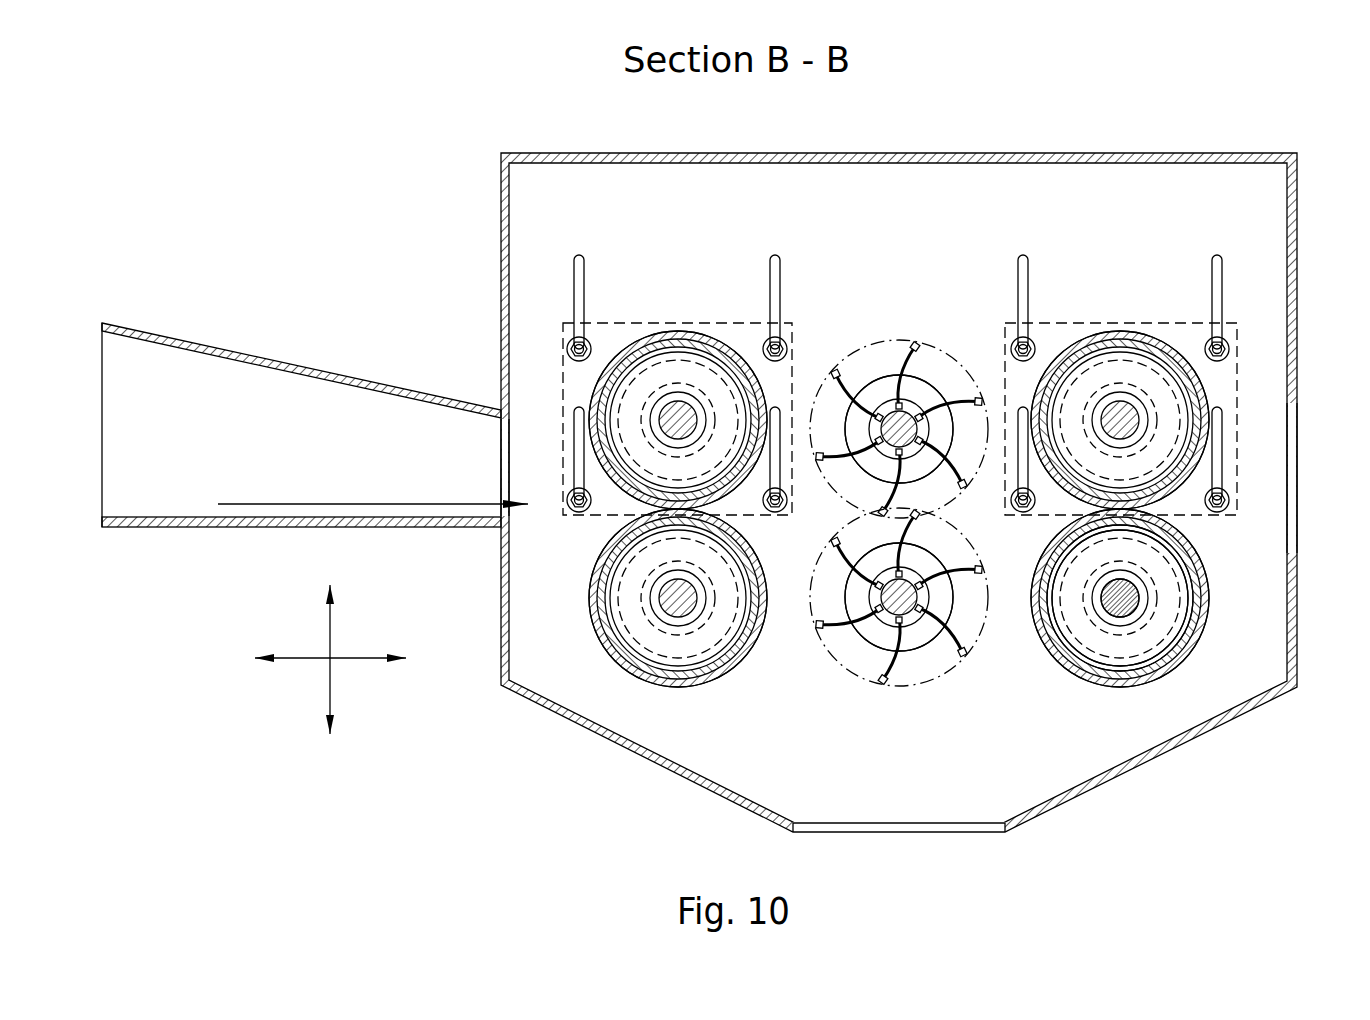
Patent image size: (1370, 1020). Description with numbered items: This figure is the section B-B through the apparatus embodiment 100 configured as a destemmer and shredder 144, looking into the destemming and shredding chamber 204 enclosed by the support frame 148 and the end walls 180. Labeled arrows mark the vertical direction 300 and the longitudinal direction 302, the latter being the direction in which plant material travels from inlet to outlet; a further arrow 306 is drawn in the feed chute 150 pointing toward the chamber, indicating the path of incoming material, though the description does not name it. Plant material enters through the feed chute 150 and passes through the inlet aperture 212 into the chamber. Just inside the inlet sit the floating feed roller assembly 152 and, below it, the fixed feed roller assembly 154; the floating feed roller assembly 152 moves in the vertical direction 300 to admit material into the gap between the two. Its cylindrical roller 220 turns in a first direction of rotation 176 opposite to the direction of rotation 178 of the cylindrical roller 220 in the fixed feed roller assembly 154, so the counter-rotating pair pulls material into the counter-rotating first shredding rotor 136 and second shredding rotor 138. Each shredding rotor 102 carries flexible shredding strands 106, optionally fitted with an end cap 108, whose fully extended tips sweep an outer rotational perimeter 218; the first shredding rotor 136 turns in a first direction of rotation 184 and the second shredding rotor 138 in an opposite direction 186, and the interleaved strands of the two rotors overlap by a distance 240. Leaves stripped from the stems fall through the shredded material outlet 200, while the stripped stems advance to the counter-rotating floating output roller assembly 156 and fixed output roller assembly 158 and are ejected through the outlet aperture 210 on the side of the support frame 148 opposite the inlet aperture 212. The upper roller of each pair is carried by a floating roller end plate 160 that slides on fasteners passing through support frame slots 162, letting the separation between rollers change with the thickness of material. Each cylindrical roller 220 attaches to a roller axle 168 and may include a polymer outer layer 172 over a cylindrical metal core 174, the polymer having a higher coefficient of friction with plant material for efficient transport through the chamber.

The apparatus embodiment 100 is at (242, 77).
The destemmer and shredder 144 is at (222, 152).
The support frame 148 is at (1185, 155).
The feed chute 150 is at (132, 328).
The floating feed roller assembly 152 is at (648, 266).
The fixed feed roller assembly 154 is at (623, 673).
The floating output roller assembly 156 is at (1115, 266).
The fixed output roller assembly 158 is at (1109, 726).
The floating roller end plate 160 is at (563, 348).
The support frame slot 162 is at (1033, 272).
The roller axle 168 is at (1132, 607).
The polymer outer layer 172 is at (1205, 572).
The cylindrical metal core 174 is at (1203, 615).
The first direction of rotation 176 is at (702, 309).
The direction of rotation 178 is at (650, 693).
The end wall 180 is at (917, 226).
The first direction of rotation 184 is at (930, 322).
The opposite direction 186 is at (913, 700).
The shredding rotor 102 is at (957, 318).
The shredding strand 106 is at (917, 352).
The end cap 108 is at (977, 645).
The first shredding rotor 136 is at (813, 338).
The second shredding rotor 138 is at (982, 667).
The shredded material outlet 200 is at (905, 873).
The destemming and shredding chamber 204 is at (731, 211).
The outlet aperture 210 is at (1345, 475).
The inlet aperture 212 is at (527, 470).
The outer rotational perimeter 218 is at (960, 490).
The cylindrical roller 220 is at (590, 394).
The overlap distance 240 is at (860, 512).
The vertical direction 300 is at (332, 620).
The longitudinal direction 302 is at (346, 662).
The feed direction 306 is at (257, 504).